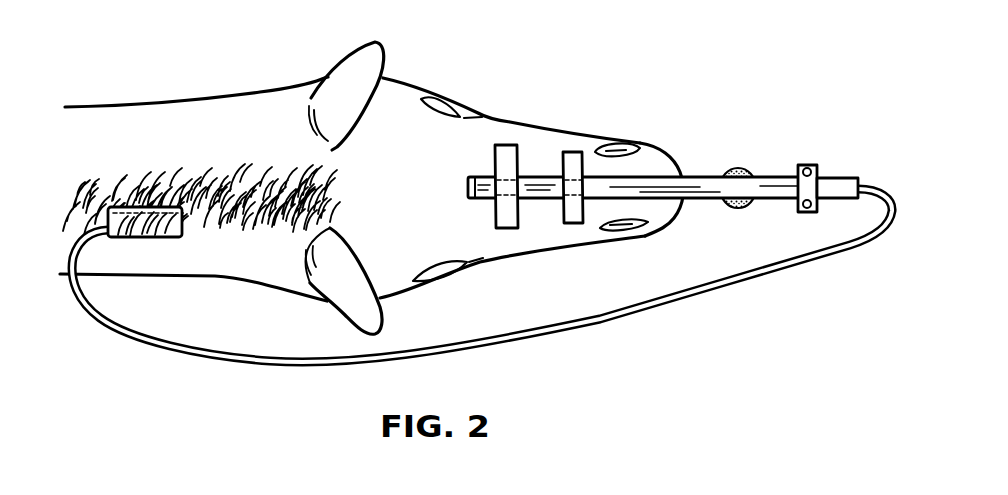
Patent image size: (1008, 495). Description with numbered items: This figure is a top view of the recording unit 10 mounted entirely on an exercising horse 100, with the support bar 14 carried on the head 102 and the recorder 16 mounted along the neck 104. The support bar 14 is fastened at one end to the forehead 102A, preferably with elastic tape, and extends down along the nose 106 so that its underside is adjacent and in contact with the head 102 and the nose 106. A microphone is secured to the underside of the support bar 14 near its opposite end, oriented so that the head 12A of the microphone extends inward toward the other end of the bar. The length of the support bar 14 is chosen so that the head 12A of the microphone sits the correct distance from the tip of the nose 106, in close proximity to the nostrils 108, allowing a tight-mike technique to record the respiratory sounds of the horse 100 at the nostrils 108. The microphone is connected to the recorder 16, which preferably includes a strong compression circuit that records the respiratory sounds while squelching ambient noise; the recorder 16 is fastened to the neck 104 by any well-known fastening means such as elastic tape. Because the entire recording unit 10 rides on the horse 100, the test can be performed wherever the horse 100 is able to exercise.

The recording unit 10 is at (652, 333).
The head of the microphone 12A is at (738, 168).
The support bar 14 is at (538, 176).
The recorder 16 is at (160, 193).
The horse 100 is at (152, 118).
The head 102 is at (402, 113).
The forehead 102A is at (540, 228).
The neck 104 is at (160, 263).
The nose 106 is at (677, 222).
The nostrils 108 is at (620, 153).